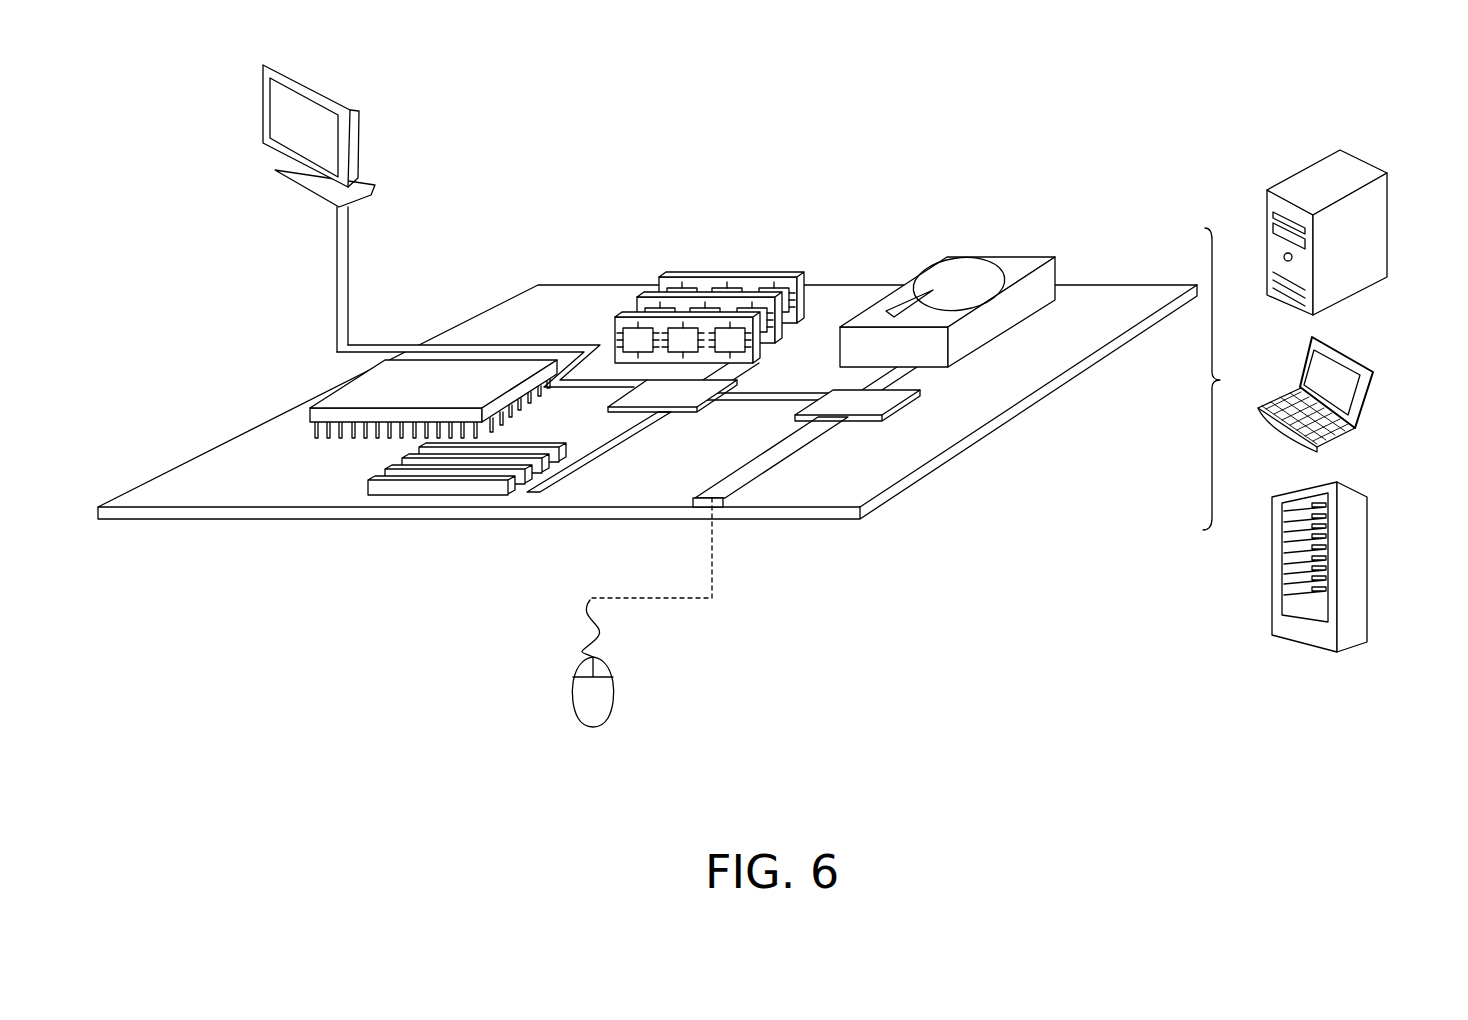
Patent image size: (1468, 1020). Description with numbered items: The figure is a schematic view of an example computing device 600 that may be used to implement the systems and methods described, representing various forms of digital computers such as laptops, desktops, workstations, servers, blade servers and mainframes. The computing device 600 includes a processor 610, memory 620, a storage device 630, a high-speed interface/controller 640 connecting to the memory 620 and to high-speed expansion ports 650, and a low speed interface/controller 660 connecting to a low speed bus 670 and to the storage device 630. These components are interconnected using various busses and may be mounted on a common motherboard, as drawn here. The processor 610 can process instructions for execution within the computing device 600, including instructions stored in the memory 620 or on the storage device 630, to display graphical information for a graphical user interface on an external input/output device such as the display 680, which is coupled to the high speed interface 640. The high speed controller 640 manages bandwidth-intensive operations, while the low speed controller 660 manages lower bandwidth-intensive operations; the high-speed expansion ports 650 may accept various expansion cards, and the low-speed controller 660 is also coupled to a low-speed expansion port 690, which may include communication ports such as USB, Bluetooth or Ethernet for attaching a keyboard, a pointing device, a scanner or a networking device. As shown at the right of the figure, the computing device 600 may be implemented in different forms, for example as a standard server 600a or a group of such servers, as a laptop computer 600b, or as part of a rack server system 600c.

The computing device 600 is at (807, 124).
The standard server 600a is at (1297, 170).
The laptop computer 600b is at (1352, 370).
The rack server system 600c is at (1360, 548).
The processor 610 is at (310, 409).
The memory 620 is at (728, 272).
The storage device 630 is at (995, 257).
The high-speed interface/controller 640 is at (677, 412).
The high-speed expansion ports 650 is at (368, 483).
The low speed interface/controller 660 is at (847, 400).
The low speed bus 670 is at (800, 462).
The display 680 is at (263, 110).
The low-speed expansion port 690 is at (724, 508).